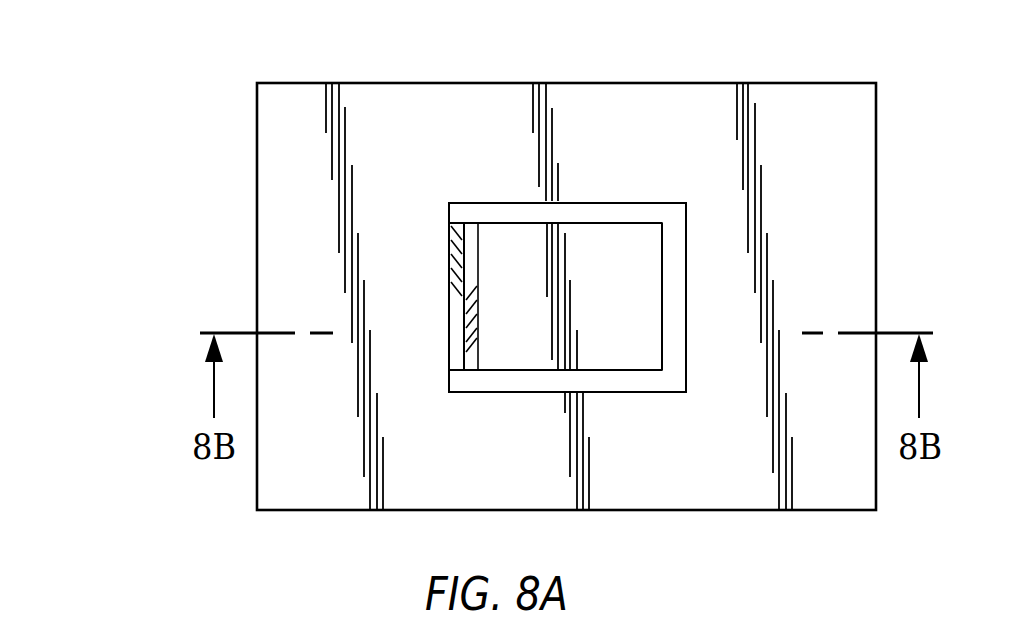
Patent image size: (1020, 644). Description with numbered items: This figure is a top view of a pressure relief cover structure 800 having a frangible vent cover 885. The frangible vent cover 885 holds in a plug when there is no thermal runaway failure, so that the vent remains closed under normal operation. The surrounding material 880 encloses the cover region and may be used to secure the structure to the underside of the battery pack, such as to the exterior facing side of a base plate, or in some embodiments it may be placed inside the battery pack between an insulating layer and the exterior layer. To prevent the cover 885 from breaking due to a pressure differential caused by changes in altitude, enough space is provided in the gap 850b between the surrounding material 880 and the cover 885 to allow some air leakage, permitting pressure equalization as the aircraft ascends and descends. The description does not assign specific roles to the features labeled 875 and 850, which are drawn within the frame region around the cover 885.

The pressure relief cover structure 800 is at (232, 147).
The surrounding material 880 is at (299, 129).
The conductive pad 875 is at (469, 224).
The frangible vent cover 885 is at (583, 226).
The frame 850 is at (639, 211).
The gap 850b is at (674, 273).